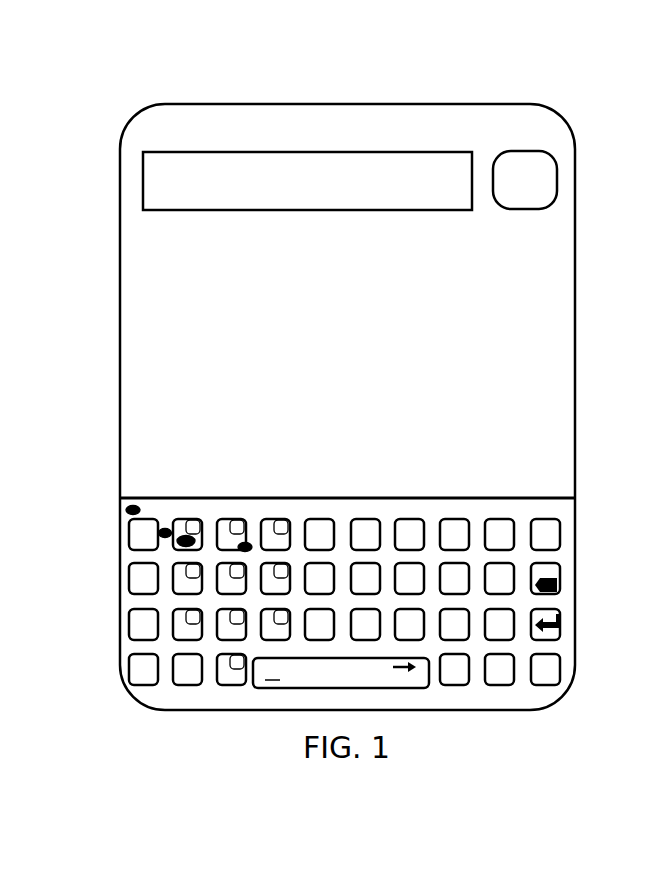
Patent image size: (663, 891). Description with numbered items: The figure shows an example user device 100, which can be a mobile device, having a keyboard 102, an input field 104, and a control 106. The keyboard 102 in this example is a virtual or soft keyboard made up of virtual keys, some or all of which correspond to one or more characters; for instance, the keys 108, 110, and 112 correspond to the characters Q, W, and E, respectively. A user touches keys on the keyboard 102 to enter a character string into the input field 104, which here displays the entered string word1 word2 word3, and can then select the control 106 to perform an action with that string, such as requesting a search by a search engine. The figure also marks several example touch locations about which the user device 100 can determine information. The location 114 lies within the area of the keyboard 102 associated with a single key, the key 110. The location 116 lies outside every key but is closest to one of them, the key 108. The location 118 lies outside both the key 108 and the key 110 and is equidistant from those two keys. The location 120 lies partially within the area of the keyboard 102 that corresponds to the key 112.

The user device 100 is at (167, 63).
The keyboard 102 is at (434, 508).
The input field 104 is at (282, 211).
The control 106 is at (520, 209).
The key 108 is at (129, 541).
The key 110 is at (182, 518).
The key 112 is at (236, 519).
The location 114 is at (180, 546).
The location 116 is at (133, 512).
The location 118 is at (165, 531).
The location 120 is at (247, 545).